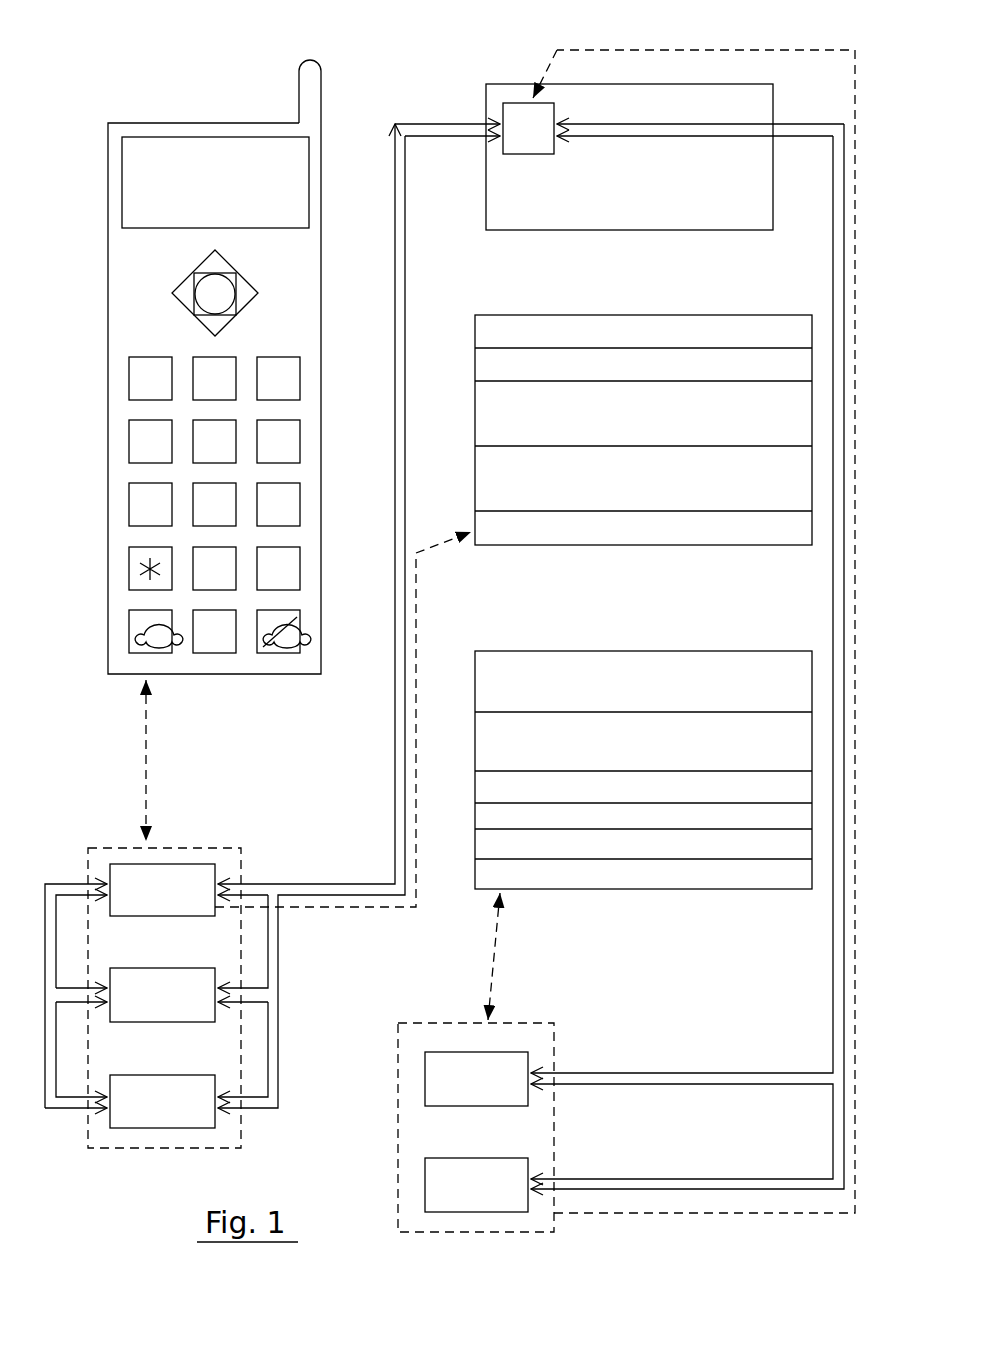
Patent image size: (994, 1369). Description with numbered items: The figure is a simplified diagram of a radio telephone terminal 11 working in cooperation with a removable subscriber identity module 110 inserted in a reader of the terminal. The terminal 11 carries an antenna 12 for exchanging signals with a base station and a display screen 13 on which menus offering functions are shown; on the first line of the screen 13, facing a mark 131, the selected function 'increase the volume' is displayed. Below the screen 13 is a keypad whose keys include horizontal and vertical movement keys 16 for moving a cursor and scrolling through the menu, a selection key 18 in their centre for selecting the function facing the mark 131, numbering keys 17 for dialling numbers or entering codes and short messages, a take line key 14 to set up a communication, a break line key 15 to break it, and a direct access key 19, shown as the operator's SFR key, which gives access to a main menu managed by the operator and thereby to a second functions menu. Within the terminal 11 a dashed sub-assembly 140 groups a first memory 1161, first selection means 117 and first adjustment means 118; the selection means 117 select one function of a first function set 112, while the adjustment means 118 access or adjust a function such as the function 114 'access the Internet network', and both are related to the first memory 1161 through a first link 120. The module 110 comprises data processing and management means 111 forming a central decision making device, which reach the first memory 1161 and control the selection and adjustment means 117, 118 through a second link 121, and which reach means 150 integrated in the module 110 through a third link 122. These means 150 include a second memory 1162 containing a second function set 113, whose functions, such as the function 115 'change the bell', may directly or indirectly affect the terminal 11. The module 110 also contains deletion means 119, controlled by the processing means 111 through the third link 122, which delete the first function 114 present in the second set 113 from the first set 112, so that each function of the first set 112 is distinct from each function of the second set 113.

The radio telephone terminal 11 is at (113, 123).
The antenna 12 is at (305, 88).
The display screen 13 is at (193, 150).
The mark 131 is at (134, 176).
The take line key 14 is at (129, 628).
The break line key 15 is at (283, 654).
The horizontal and vertical movement keys 16 is at (196, 268).
The numbering keys 17 is at (280, 420).
The selection key 18 is at (205, 302).
The direct access key 19 is at (215, 654).
The subscriber identity module 110 is at (683, 112).
The data processing and management means 111 is at (517, 112).
The first function set 112 is at (607, 315).
The second function set 113 is at (652, 651).
The first function 114 is at (573, 546).
The function 115 is at (505, 786).
The first memory 1161 is at (170, 876).
The second memory 1162 is at (500, 1063).
The first selection means 117 is at (180, 1000).
The first adjustment means 118 is at (167, 1113).
The deletion means 119 is at (513, 1172).
The first link 120 is at (58, 888).
The second link 121 is at (333, 884).
The third link 122 is at (840, 290).
The first sub-assembly 140 is at (103, 1148).
The means integrated in the subscriber identity module 150 is at (525, 1023).